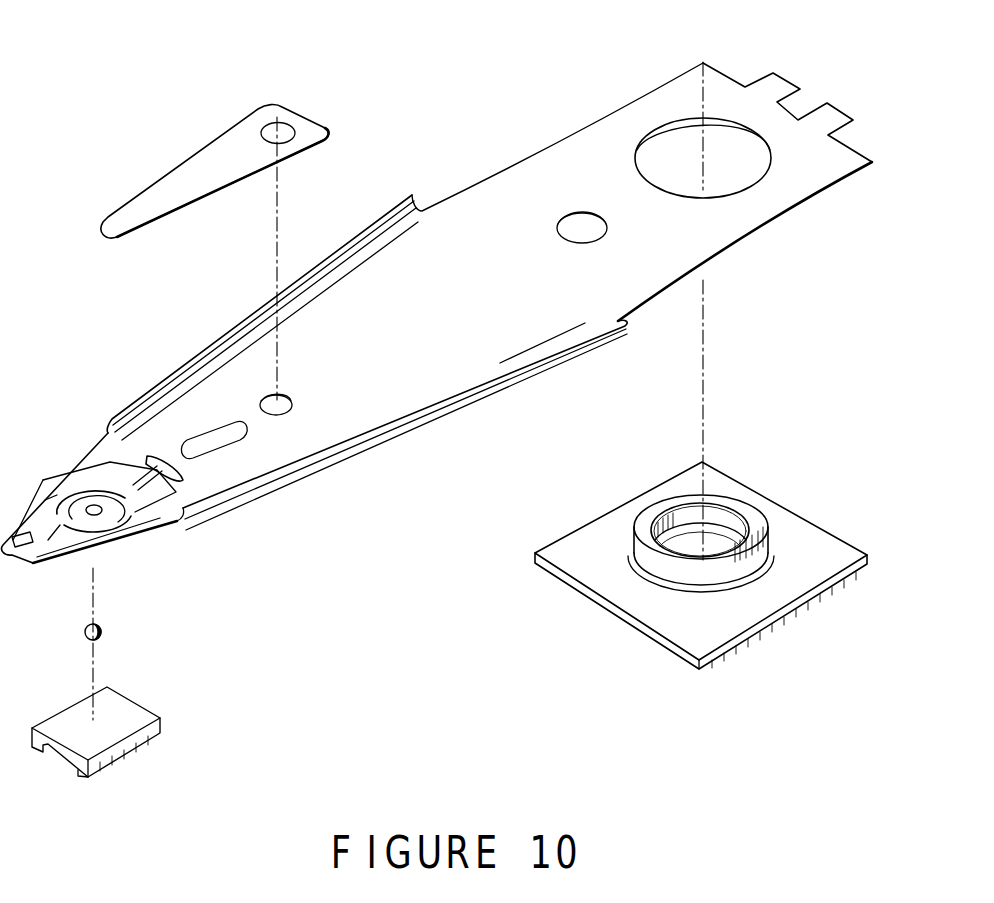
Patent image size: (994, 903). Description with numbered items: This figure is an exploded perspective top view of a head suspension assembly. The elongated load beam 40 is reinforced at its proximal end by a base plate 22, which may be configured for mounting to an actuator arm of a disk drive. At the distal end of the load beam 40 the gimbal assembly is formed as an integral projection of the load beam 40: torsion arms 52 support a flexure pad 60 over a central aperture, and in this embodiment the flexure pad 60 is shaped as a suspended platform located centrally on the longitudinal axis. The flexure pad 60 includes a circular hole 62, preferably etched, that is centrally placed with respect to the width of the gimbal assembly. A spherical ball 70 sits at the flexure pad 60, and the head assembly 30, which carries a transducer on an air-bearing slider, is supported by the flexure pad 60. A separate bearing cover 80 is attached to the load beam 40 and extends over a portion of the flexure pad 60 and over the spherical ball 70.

The base plate 22 is at (723, 618).
The head assembly 30 is at (125, 768).
The load beam 40 is at (368, 352).
The torsion arms 52 is at (93, 497).
The flexure pad 60 is at (72, 503).
The circular hole 62 is at (97, 512).
The spherical ball 70 is at (110, 635).
The bearing cover 80 is at (182, 178).